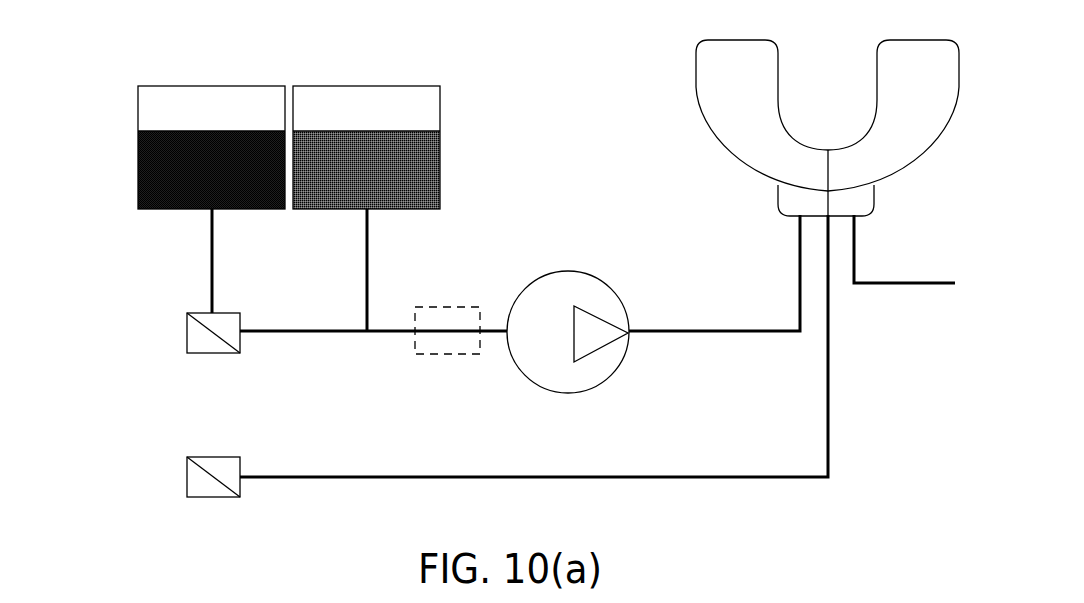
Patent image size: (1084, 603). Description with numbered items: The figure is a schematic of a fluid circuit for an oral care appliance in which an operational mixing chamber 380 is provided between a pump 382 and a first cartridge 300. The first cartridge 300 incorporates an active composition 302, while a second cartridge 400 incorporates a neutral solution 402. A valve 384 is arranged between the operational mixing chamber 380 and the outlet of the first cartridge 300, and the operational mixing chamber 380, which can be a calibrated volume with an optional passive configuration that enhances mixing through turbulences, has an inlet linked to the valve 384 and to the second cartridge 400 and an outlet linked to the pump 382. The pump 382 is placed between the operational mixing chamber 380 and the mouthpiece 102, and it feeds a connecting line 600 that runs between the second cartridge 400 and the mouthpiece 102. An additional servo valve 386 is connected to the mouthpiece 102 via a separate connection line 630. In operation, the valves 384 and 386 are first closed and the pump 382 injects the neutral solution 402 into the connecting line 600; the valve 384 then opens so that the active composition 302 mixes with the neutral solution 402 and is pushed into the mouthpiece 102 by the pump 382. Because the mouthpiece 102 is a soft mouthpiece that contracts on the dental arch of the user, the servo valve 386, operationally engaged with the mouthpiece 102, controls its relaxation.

The mouthpiece 102 is at (720, 110).
The first cartridge 300 is at (137, 110).
The active composition 302 is at (163, 175).
The second cartridge 400 is at (441, 105).
The neutral solution 402 is at (417, 175).
The operational mixing chamber 380 is at (445, 356).
The pump 382 is at (533, 370).
The valve 384 is at (205, 345).
The servo valve 386 is at (197, 478).
The connecting line 600 is at (755, 338).
The connection line 630 is at (830, 385).